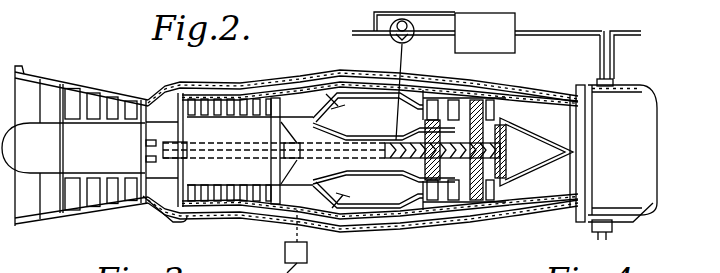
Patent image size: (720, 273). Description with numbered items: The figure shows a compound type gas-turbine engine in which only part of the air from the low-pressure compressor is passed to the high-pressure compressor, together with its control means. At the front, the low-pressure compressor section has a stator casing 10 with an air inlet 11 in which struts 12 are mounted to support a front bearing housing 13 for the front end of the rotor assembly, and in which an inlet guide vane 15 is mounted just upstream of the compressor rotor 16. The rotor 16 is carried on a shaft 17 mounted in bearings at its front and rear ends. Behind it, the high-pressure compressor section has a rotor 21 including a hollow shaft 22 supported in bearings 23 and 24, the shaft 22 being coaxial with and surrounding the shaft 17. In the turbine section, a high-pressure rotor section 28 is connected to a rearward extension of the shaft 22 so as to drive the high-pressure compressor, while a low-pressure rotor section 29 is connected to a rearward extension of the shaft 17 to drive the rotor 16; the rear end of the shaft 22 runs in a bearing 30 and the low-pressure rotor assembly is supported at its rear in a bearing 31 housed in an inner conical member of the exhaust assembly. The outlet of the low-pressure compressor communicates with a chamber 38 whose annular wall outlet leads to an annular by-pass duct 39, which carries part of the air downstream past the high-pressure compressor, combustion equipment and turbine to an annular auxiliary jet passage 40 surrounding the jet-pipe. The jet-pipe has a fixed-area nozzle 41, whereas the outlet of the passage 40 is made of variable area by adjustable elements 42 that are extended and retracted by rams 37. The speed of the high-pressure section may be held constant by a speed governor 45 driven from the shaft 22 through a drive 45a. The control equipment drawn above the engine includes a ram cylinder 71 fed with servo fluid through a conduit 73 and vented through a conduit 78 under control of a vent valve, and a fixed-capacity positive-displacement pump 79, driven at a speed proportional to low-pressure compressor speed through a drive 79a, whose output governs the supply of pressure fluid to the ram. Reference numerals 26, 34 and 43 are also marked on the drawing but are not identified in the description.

The stator casing 10 is at (97, 90).
The air inlet 11 is at (23, 98).
The struts 12 is at (35, 92).
The front bearing housing 13 is at (17, 156).
The inlet guide vane 15 is at (54, 95).
The compressor rotor 16 is at (93, 173).
The shaft 17 is at (142, 198).
The rotor 21 is at (195, 173).
The shaft 22 is at (363, 126).
The bearing 23 is at (180, 139).
The bearing 24 is at (286, 166).
The fuel nozzle 26 is at (341, 201).
The high-pressure rotor section 28 is at (456, 212).
The low-pressure rotor section 29 is at (483, 214).
The bearing 30 is at (426, 162).
The bearing 31 is at (506, 152).
The inner casing 34 is at (540, 113).
The rams 37 is at (598, 81).
The chamber 38 is at (165, 105).
The annular by-pass duct 39 is at (224, 93).
The annular auxiliary jet passage 40 is at (610, 104).
The fixed-area nozzle 41 is at (648, 120).
The adjustable elements 42 is at (646, 97).
The outer casing 43 is at (289, 81).
The speed governor 45 is at (307, 252).
The drive 45a is at (283, 241).
The cylinder 71 is at (476, 13).
The conduit 73 is at (631, 31).
The conduit 78 is at (143, 142).
The fixed-capacity positive-displacement pump 79 is at (413, 40).
The drive 79a is at (392, 36).